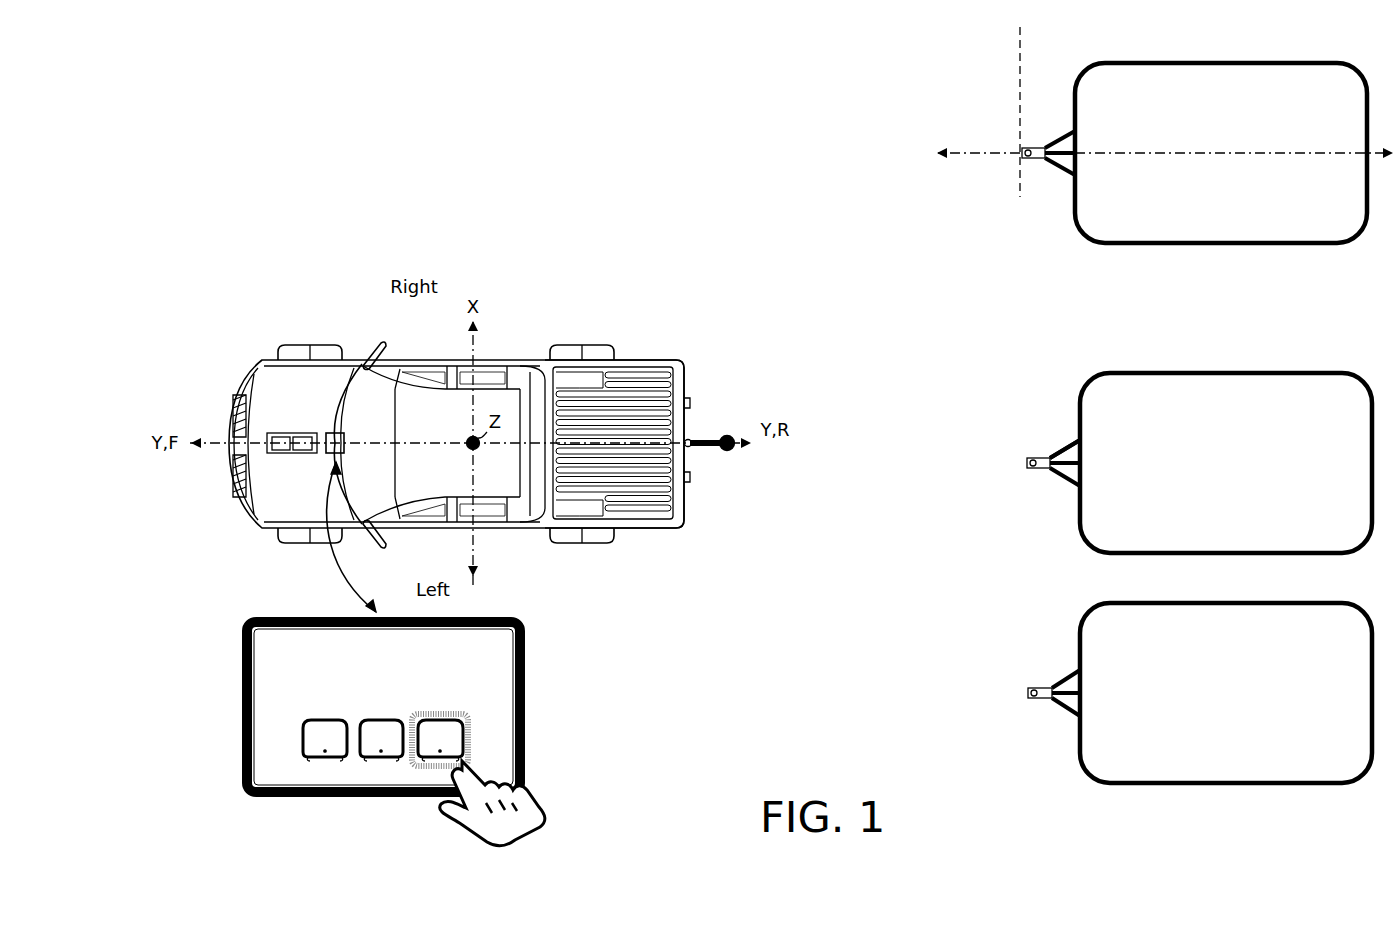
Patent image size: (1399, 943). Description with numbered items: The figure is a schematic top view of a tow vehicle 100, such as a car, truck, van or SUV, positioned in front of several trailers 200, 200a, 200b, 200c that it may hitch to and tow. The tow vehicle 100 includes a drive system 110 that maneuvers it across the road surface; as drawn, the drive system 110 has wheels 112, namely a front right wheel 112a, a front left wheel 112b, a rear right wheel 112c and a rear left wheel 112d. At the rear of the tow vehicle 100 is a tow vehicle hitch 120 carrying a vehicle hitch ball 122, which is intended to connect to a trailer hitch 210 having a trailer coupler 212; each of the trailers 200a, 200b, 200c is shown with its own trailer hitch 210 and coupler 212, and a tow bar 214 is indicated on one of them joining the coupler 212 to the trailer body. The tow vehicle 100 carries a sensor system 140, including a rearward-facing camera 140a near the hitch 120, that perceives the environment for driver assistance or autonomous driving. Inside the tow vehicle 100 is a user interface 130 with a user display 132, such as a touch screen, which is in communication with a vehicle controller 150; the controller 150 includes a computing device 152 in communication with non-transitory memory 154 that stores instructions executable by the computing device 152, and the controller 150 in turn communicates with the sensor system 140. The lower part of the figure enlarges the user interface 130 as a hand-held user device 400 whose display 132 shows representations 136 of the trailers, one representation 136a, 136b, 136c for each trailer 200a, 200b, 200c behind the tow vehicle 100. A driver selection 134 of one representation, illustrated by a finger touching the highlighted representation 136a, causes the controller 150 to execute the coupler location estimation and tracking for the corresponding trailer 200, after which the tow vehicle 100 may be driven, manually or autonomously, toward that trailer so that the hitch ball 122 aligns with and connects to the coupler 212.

The tow vehicle 100 is at (243, 338).
The drive system 110 is at (447, 441).
The wheels 112 is at (447, 441).
The front right wheel 112a is at (305, 344).
The front left wheel 112b is at (305, 541).
The rear right wheel 112c is at (593, 344).
The rear left wheel 112d is at (595, 541).
The tow vehicle hitch 120 is at (715, 447).
The vehicle hitch ball 122 is at (726, 447).
The user interface 130 is at (344, 433).
The user display 132 is at (502, 706).
The driver selection 134 is at (465, 713).
The representations of trailers 136 is at (380, 708).
The representation of trailer 136a is at (437, 717).
The representation of trailer 136b is at (379, 717).
The representation of trailer 136c is at (321, 717).
The sensor system 140 is at (388, 357).
The rear camera 140a is at (688, 443).
The vehicle controller 150 is at (297, 433).
The computing device 152 is at (279, 451).
The non-transitory memory 154 is at (302, 453).
The trailer 200 is at (1158, 405).
The trailer 200a is at (1158, 135).
The trailer 200b is at (1211, 463).
The trailer 200c is at (1212, 693).
The trailer hitch 210 is at (1033, 147).
The trailer coupler 212 is at (1020, 151).
The tow bar 214 is at (1058, 449).
The user device 400 is at (272, 659).